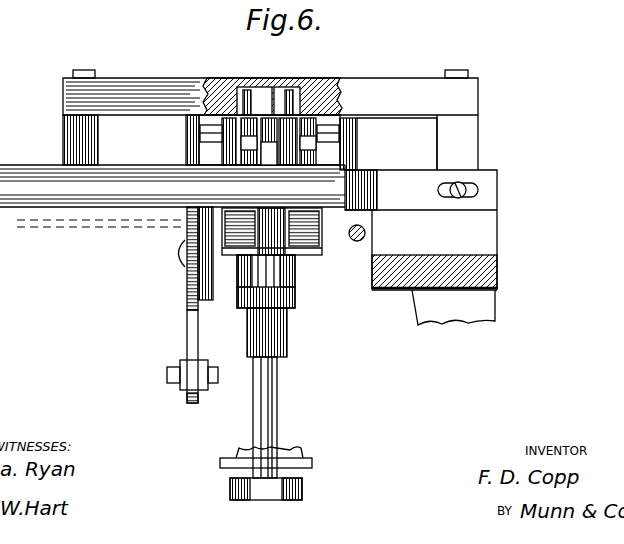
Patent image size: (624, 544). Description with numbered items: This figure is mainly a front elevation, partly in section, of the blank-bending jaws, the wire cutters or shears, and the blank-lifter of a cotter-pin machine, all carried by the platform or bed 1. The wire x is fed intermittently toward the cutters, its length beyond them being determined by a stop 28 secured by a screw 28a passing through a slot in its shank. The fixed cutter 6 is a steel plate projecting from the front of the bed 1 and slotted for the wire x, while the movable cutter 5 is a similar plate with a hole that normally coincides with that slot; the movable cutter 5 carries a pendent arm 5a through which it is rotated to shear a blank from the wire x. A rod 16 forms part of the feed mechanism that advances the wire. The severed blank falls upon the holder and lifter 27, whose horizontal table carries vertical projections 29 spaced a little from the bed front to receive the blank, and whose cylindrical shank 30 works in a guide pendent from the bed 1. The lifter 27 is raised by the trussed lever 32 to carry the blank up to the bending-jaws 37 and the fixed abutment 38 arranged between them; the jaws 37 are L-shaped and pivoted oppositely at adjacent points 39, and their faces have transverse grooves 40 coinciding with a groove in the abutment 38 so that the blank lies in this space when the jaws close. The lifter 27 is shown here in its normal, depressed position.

The platform or bed 1 is at (239, 138).
The wire x is at (132, 226).
The movable cutter 5 is at (186, 276).
The pendent arm 5a is at (187, 336).
The fixed cutter 6 is at (209, 261).
The rod 16 is at (180, 385).
The holder and lifter 27 is at (283, 306).
The stop 28 is at (421, 247).
The screw 28a is at (458, 199).
The vertical projections 29 is at (272, 231).
The cylindrical shank 30 is at (282, 418).
The trussed lever 32 is at (275, 493).
The bending-jaws 37 is at (353, 133).
The fixed abutment 38 is at (268, 130).
The pivot points 39 is at (297, 86).
The transverse grooves 40 is at (337, 120).